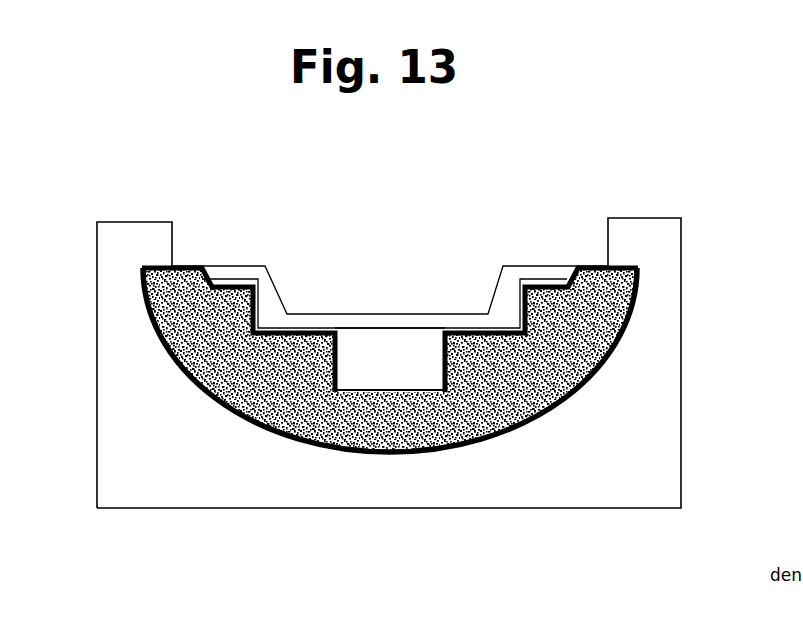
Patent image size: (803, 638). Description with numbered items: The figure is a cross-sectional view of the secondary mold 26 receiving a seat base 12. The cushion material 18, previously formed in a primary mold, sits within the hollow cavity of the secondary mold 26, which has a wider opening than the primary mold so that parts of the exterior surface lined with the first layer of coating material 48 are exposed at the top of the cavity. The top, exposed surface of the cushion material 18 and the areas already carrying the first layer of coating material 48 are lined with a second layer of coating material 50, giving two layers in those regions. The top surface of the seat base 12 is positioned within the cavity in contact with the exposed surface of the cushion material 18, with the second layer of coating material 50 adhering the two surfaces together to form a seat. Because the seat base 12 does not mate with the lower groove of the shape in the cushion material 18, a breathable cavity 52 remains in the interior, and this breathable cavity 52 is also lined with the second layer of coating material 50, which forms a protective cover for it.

The seat base 12 is at (265, 275).
The cushion material 18 is at (532, 424).
The secondary mold 26 is at (640, 477).
The first layer of coating material 48 is at (583, 263).
The second layer of coating material 50 is at (520, 277).
The breathable cavity 52 is at (368, 356).